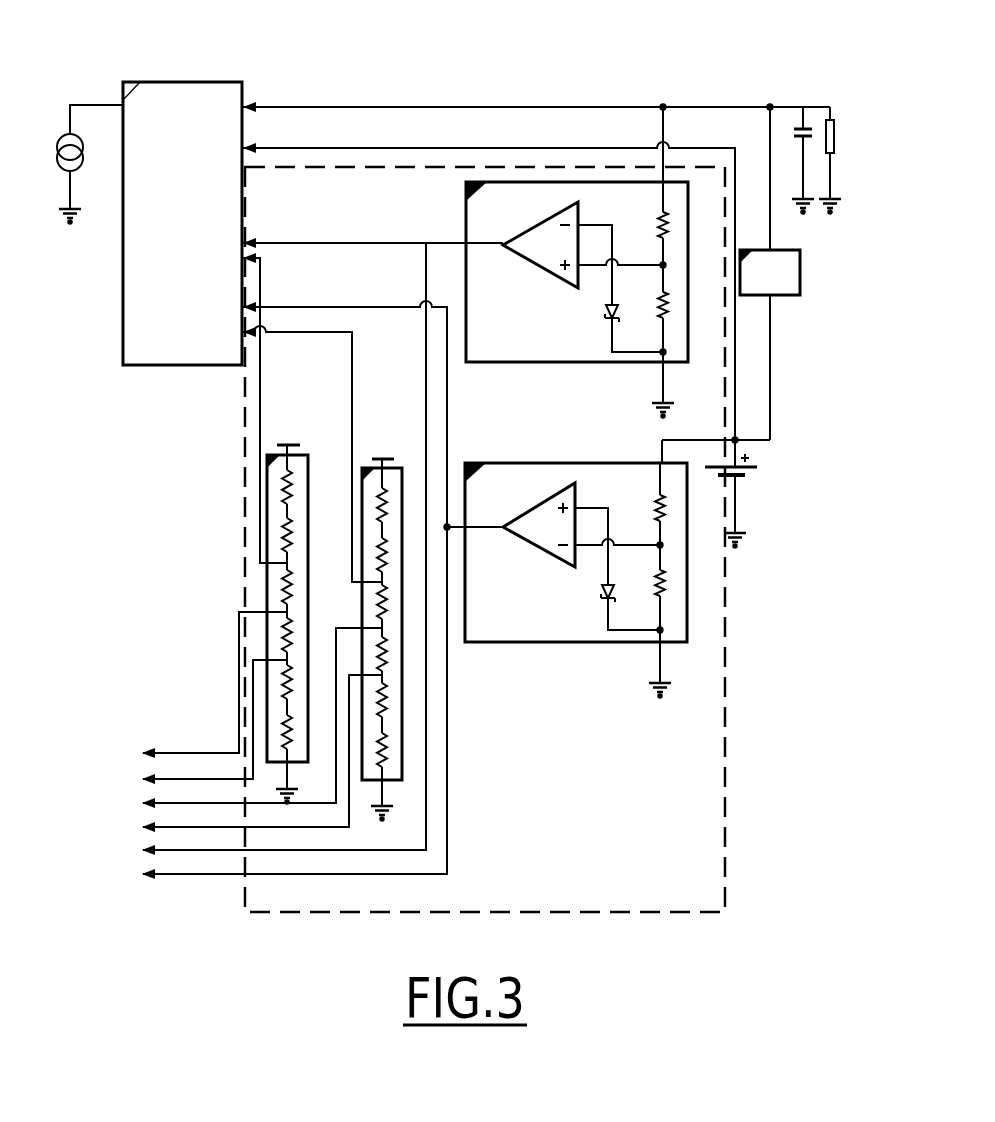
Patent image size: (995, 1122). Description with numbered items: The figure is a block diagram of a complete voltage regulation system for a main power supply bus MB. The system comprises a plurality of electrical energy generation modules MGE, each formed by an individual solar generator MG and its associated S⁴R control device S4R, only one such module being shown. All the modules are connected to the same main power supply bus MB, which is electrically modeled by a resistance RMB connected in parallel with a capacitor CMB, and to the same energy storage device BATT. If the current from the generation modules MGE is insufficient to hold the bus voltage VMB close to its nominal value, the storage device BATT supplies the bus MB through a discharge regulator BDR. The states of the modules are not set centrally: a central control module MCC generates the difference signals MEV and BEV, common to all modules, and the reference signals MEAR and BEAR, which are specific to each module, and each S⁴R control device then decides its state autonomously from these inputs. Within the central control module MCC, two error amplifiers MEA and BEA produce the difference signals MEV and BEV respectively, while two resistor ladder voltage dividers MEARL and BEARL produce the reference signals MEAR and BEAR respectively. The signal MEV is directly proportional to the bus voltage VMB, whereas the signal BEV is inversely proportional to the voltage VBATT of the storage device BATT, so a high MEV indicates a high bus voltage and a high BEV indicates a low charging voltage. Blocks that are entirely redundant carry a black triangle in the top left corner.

The electrical energy generation module MGE is at (177, 74).
The S⁴R control device S4R is at (198, 221).
The solar generator MG is at (83, 152).
The main power supply bus MB is at (545, 107).
The voltage on the bus VMB is at (692, 114).
The capacitor CMB is at (797, 128).
The resistance RMB is at (836, 128).
The energy storage device BATT is at (737, 478).
The discharge regulator BDR is at (793, 286).
The voltage of the energy storage device VBATT is at (682, 433).
The central control module MCC is at (522, 914).
The error amplifier MEA is at (466, 222).
The error amplifier BEA is at (508, 644).
The difference signal MEV is at (365, 242).
The difference signal BEV is at (451, 405).
The reference signal MEAR is at (261, 284).
The reference signal BEAR is at (355, 357).
The resistor ladder voltage divider MEARL is at (203, 594).
The resistor ladder voltage divider BEARL is at (242, 620).